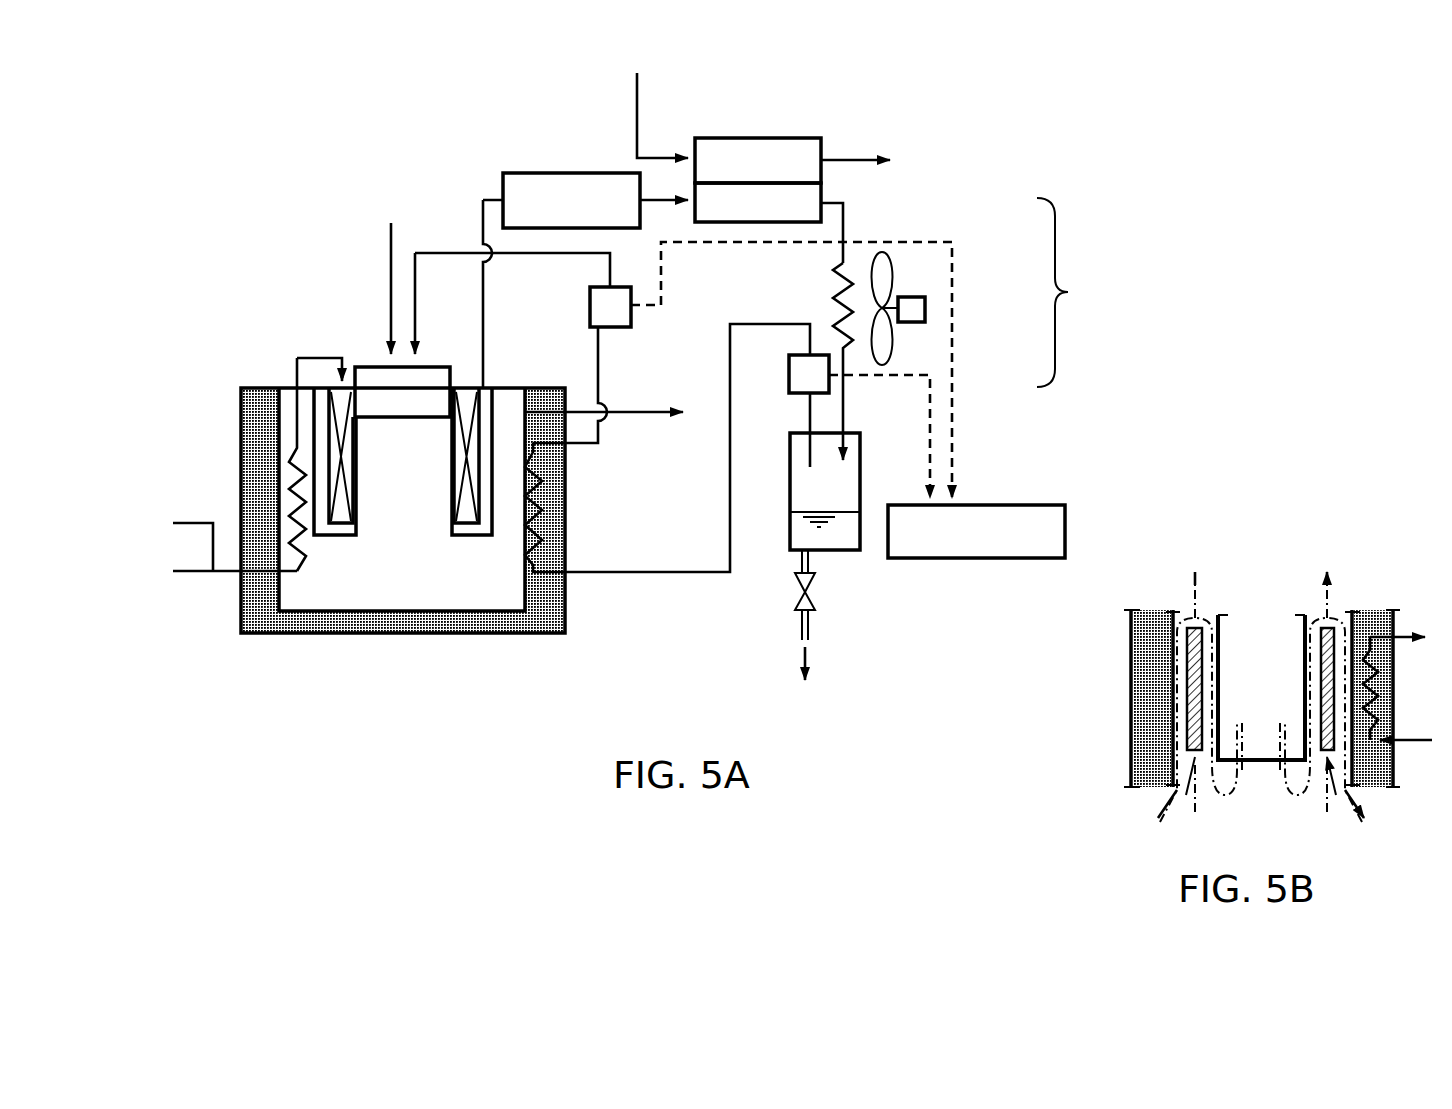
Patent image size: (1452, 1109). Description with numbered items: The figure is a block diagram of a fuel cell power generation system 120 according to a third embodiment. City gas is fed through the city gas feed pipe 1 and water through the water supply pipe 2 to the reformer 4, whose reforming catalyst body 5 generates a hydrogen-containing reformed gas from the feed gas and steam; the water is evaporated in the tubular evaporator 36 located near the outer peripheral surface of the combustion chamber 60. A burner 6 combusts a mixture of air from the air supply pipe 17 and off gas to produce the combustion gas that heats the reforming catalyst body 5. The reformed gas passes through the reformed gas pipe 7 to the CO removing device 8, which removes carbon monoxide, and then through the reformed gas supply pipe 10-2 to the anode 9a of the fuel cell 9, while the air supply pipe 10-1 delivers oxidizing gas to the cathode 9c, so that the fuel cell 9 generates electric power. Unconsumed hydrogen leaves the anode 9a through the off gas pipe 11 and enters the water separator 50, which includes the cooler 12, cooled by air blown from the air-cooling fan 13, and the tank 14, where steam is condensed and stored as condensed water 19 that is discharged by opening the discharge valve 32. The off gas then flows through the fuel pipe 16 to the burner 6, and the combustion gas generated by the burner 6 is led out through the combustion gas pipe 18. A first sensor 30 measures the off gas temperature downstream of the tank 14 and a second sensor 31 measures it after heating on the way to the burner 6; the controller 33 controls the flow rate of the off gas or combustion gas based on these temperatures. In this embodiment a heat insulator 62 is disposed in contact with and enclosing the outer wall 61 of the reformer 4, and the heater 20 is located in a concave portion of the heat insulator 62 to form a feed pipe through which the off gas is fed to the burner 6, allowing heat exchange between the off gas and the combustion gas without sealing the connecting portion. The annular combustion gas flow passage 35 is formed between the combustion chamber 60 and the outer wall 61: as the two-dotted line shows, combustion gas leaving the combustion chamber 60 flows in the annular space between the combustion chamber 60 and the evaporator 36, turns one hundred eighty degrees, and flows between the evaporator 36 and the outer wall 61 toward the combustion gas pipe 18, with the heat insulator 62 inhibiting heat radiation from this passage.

In FIG. 5A, the city gas feed pipe 1 is at (193, 523).
In FIG. 5A, the water supply pipe 2 is at (190, 571).
In FIG. 5A, the reformer 4 is at (272, 602).
In FIG. 5A, the reforming catalyst body 5 is at (300, 425).
In FIG. 5A, the burner 6 is at (402, 420).
In FIG. 5A, the reformed gas pipe 7 is at (483, 200).
In FIG. 5A, the CO removing device 8 is at (525, 173).
In FIG. 5A, the fuel cell 9 is at (745, 138).
In FIG. 5A, the anode 9a is at (695, 210).
In FIG. 5A, the cathode 9c is at (826, 143).
In FIG. 5A, the air supply pipe 10-1 is at (637, 118).
In FIG. 5A, the reformed gas supply pipe 10-2 is at (657, 200).
In FIG. 5A, the off gas pipe 11 is at (849, 225).
In FIG. 5A, the cooler 12 is at (850, 268).
In FIG. 5A, the air-cooling fan 13 is at (890, 340).
In FIG. 5A, the tank 14 is at (860, 445).
In FIG. 5A, the fuel pipe 16 is at (598, 350).
In FIG. 5A, the air supply pipe 17 is at (391, 297).
In FIG. 5A, the combustion gas pipe 18 is at (640, 415).
In FIG. 5A, the condensed water 19 is at (795, 536).
In FIG. 5A, the heater 20 is at (548, 495).
In FIG. 5B, the heater 20 is at (1372, 705).
In FIG. 5A, the first sensor 30 is at (822, 353).
In FIG. 5A, the second sensor 31 is at (590, 305).
In FIG. 5A, the discharge valve 32 is at (797, 598).
In FIG. 5A, the controller 33 is at (1013, 505).
In FIG. 5A, the combustion gas flow passage 35 is at (497, 520).
In FIG. 5B, the combustion gas flow passage 35 is at (1184, 620).
In FIG. 5A, the evaporator 36 is at (290, 492).
In FIG. 5B, the evaporator 36 is at (1261, 796).
In FIG. 5A, the water separator 50 is at (1067, 292).
In FIG. 5B, the combustion chamber 60 is at (1277, 694).
In FIG. 5A, the outer wall 61 is at (528, 598).
In FIG. 5B, the outer wall 61 is at (1160, 625).
In FIG. 5A, the heat insulator 62 is at (323, 625).
In FIG. 5B, the heat insulator 62 is at (1148, 760).
In FIG. 5A, the fuel cell power generation system 120 is at (1108, 180).